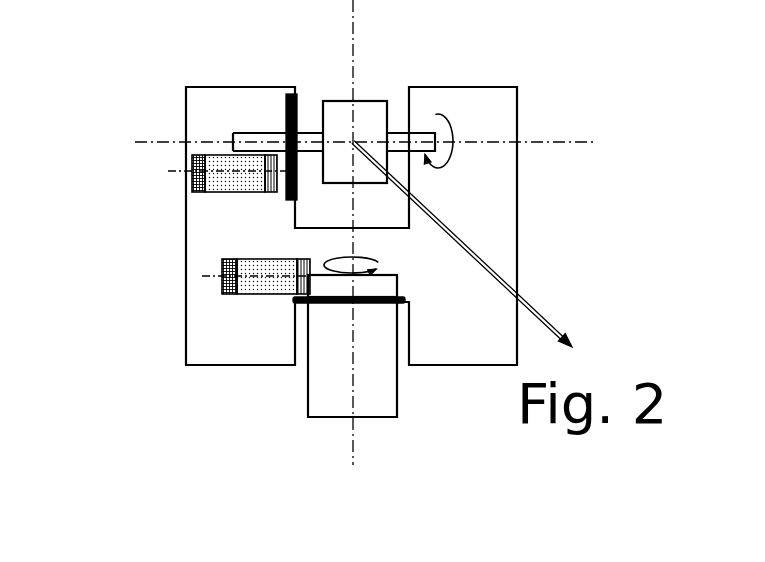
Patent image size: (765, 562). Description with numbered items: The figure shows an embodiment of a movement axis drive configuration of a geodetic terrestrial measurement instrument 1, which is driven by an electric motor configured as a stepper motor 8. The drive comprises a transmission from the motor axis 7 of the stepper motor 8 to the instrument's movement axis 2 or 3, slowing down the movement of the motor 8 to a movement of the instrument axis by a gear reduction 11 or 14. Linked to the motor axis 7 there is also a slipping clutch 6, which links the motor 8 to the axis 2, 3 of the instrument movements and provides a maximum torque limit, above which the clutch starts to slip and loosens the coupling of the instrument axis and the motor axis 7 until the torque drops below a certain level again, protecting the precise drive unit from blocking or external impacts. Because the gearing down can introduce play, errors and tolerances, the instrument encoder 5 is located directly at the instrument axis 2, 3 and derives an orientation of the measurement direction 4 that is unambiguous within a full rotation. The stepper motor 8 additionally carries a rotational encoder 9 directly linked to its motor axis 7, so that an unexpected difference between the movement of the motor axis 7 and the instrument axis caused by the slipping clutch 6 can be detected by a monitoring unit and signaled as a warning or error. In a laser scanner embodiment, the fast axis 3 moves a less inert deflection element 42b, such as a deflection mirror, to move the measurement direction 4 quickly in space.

The geodetic surveying instrument 1 is at (588, 108).
The movement axis 2 is at (357, 395).
The movement axis 3 is at (150, 140).
The measurement direction 4 is at (543, 313).
The instrument encoder 5 is at (287, 118).
The slipping clutch 6 is at (172, 266).
The motor axis 7 is at (168, 170).
The stepper motor 8 is at (263, 192).
The rotational encoder 9 is at (243, 178).
The gear reduction 11 is at (172, 266).
The gear reduction 14 is at (172, 266).
The deflection element 42b is at (374, 108).